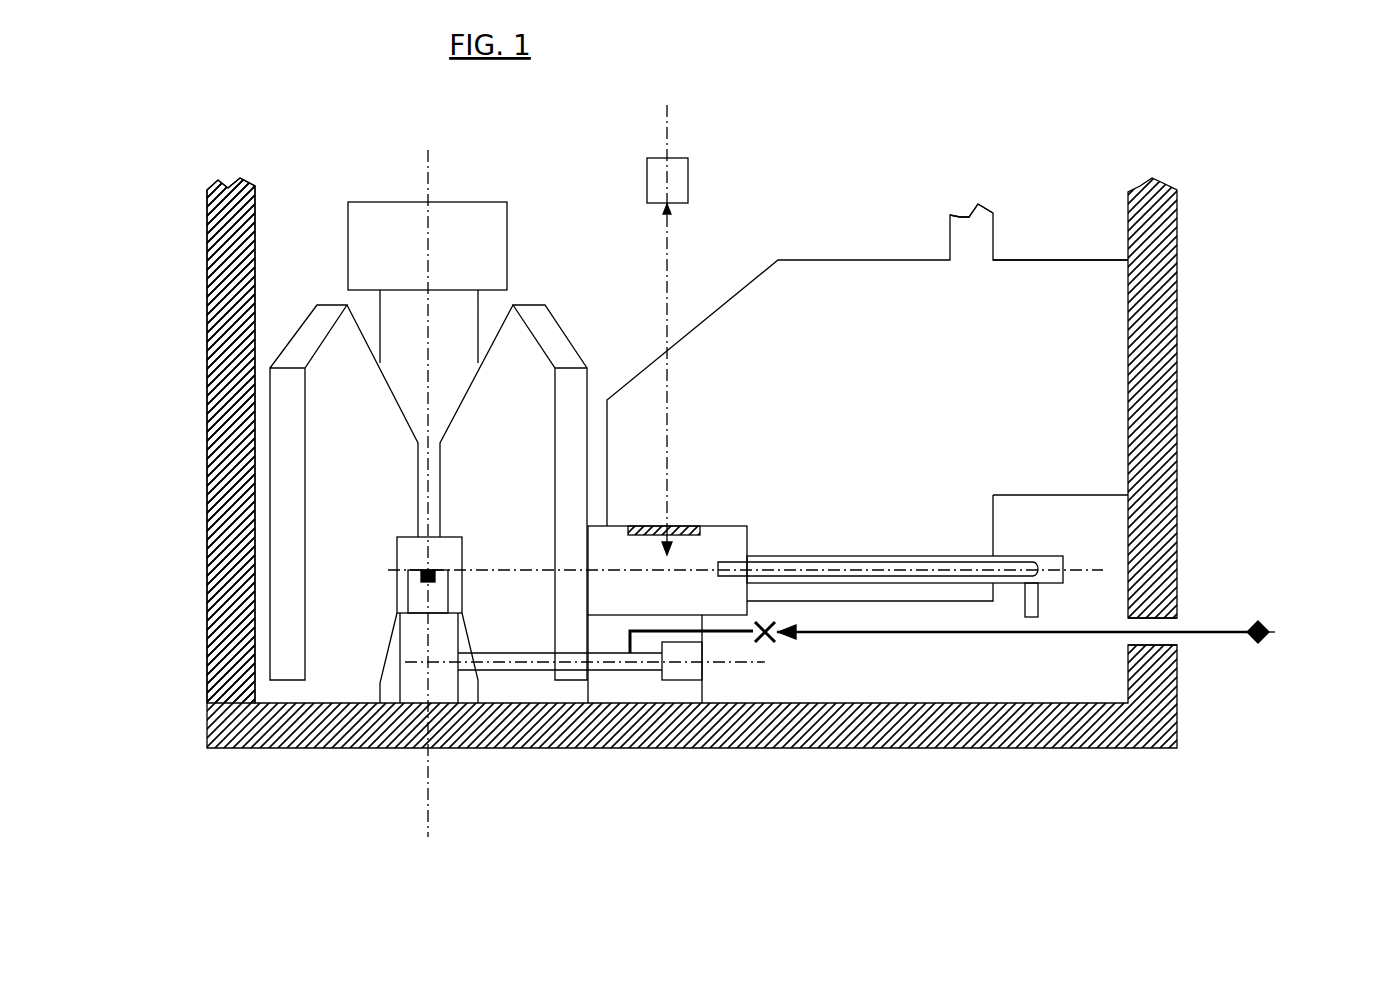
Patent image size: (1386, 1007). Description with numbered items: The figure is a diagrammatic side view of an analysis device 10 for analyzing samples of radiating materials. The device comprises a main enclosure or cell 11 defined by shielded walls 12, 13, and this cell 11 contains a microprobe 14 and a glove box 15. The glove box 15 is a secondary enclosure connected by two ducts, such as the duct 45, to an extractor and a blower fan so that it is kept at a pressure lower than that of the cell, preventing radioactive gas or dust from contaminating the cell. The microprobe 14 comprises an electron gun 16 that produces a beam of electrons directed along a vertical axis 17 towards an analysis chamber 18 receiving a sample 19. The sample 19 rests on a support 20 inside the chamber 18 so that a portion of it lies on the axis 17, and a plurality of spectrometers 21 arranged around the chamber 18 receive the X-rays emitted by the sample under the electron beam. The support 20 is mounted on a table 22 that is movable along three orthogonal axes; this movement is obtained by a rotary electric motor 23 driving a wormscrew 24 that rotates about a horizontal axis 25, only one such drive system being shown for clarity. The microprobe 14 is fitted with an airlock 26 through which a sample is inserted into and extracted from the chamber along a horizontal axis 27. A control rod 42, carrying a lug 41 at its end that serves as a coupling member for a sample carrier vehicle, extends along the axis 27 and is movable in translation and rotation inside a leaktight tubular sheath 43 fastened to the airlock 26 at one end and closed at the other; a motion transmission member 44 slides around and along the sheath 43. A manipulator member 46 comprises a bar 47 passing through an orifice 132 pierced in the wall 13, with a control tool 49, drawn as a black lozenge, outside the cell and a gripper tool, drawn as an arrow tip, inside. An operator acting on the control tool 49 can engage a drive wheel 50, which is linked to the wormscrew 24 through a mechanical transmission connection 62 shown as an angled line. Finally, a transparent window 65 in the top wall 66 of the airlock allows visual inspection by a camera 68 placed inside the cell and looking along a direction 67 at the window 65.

The analysis device 10 is at (1243, 156).
The main enclosure 11 is at (867, 380).
The shielded wall 12 is at (207, 452).
The shielded wall 13 is at (1177, 262).
The orifice 132 is at (1177, 617).
The microprobe 14 is at (548, 182).
The glove box 15 is at (1060, 258).
The electron gun 16 is at (427, 246).
The vertical axis 17 is at (428, 190).
The analysis chamber 18 is at (405, 552).
The sample 19 is at (432, 572).
The support 20 is at (408, 585).
The spectrometers 21 is at (302, 323).
The table 22 is at (397, 690).
The rotary electric motor 23 is at (682, 680).
The wormscrew 24 is at (515, 667).
The horizontal axis 25 is at (715, 660).
The airlock 26 is at (745, 570).
The horizontal axis 27 is at (703, 570).
The lug 41 is at (717, 560).
The control rod 42 is at (887, 570).
The tubular sheath 43 is at (920, 583).
The motion transmission member 44 is at (1038, 603).
The duct 45 is at (950, 243).
The manipulator member 46 is at (1290, 628).
The bar 47 is at (1020, 633).
The control tool 49 is at (1255, 617).
The drive wheel 50 is at (770, 645).
The mechanical transmission connection 62 is at (630, 630).
The transparent window 65 is at (675, 525).
The top wall 66 is at (613, 525).
The direction 67 is at (667, 140).
The camera 68 is at (677, 183).